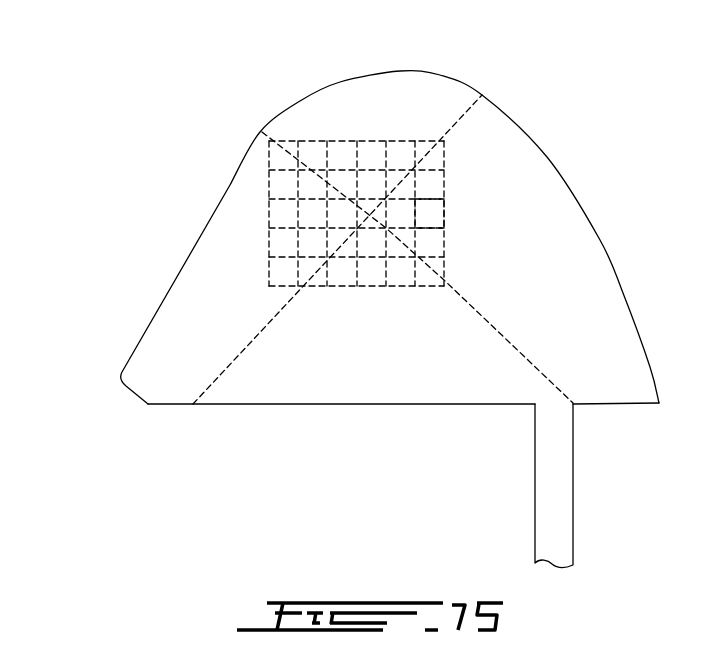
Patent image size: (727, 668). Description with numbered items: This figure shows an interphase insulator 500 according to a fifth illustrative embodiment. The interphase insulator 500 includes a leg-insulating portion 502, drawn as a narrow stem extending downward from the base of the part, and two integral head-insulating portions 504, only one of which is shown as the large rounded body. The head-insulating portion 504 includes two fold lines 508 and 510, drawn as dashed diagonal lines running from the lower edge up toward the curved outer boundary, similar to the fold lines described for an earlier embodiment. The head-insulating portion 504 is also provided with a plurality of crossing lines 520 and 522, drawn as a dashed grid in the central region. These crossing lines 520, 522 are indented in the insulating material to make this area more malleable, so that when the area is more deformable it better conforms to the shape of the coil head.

The interphase insulator 500 is at (146, 183).
The leg-insulating portion 502 is at (558, 505).
The head-insulating portion 504 is at (345, 405).
The fold line 508 is at (498, 325).
The fold line 510 is at (252, 338).
The crossing lines 520 is at (343, 140).
The crossing lines 522 is at (415, 217).